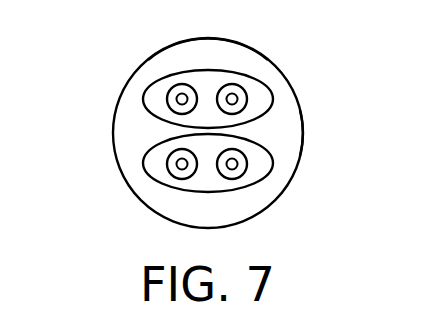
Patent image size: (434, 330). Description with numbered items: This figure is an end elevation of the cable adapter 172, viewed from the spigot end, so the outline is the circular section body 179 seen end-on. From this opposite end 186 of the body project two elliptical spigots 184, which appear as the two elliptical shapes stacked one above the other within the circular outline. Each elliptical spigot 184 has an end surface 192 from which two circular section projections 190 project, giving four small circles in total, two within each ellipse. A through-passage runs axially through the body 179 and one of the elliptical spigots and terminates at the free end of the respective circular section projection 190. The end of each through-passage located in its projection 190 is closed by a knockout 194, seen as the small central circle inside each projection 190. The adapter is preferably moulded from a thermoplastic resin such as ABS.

The cable adapter 172 is at (107, 155).
The circular section body 179 is at (249, 47).
The elliptical spigot 184 is at (143, 99).
The opposite end 186 is at (299, 132).
The circular section projection 190 is at (172, 88).
The end surface 192 is at (208, 80).
The knockout 194 is at (237, 97).